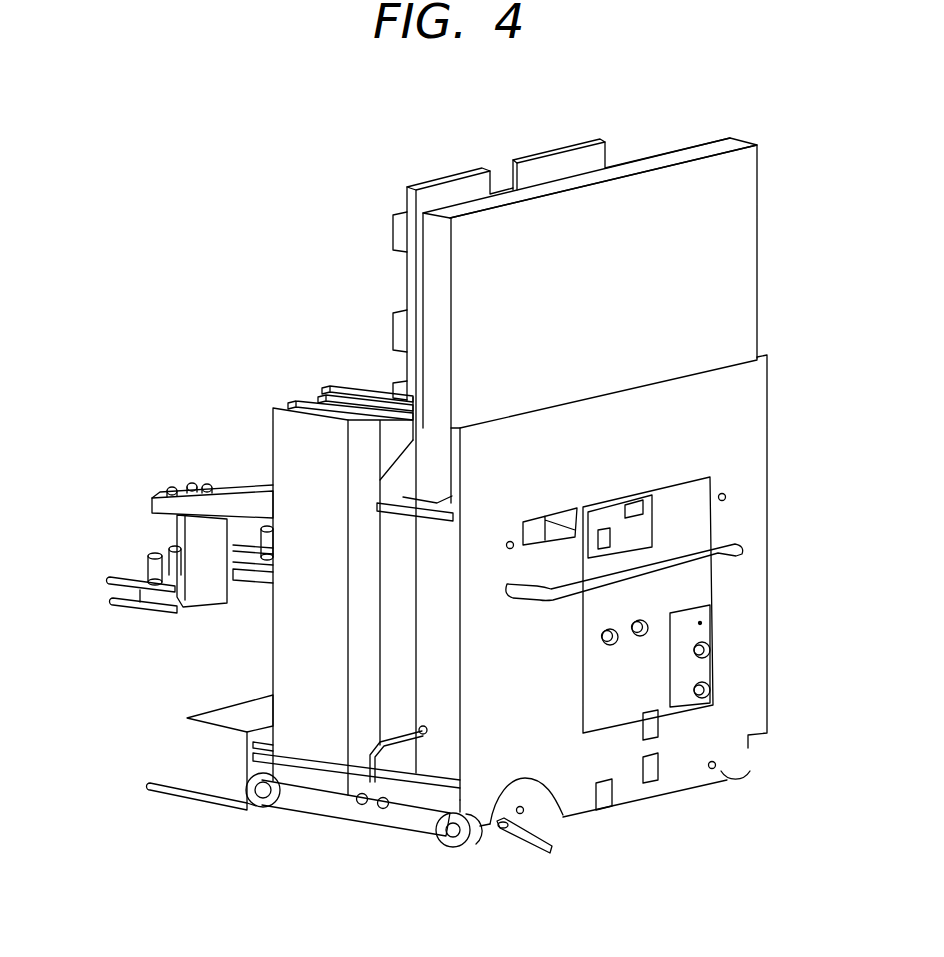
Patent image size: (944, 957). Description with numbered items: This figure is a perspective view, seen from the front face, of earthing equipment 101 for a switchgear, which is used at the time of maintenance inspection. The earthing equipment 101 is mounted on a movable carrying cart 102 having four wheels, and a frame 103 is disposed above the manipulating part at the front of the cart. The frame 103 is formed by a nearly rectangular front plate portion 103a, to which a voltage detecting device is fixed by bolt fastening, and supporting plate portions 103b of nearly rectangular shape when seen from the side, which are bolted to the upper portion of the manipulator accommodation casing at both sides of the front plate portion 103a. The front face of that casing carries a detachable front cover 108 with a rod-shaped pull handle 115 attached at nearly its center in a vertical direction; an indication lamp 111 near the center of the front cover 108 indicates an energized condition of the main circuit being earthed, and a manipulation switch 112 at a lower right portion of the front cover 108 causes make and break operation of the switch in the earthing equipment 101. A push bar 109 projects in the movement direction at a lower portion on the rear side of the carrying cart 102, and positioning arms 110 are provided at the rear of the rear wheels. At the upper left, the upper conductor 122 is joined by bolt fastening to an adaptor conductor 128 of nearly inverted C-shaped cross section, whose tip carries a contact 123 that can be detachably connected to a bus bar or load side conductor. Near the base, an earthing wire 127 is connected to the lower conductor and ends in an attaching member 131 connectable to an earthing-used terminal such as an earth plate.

The earthing equipment 101 is at (749, 116).
The carrying cart 102 is at (330, 800).
The frame 103 is at (758, 297).
The front plate portion 103a is at (723, 210).
The supporting plate portion 103b is at (428, 277).
The front cover 108 is at (740, 642).
The push bar 109 is at (226, 712).
The positioning arm 110 is at (185, 795).
The indication lamp 111 is at (647, 622).
The manipulation switch 112 is at (712, 677).
The handle 115 is at (740, 541).
The upper conductor 122 is at (215, 492).
The contact 123 is at (112, 598).
The earthing wire 127 is at (563, 815).
The adaptor conductor 128 is at (176, 546).
The attaching member 131 is at (537, 858).